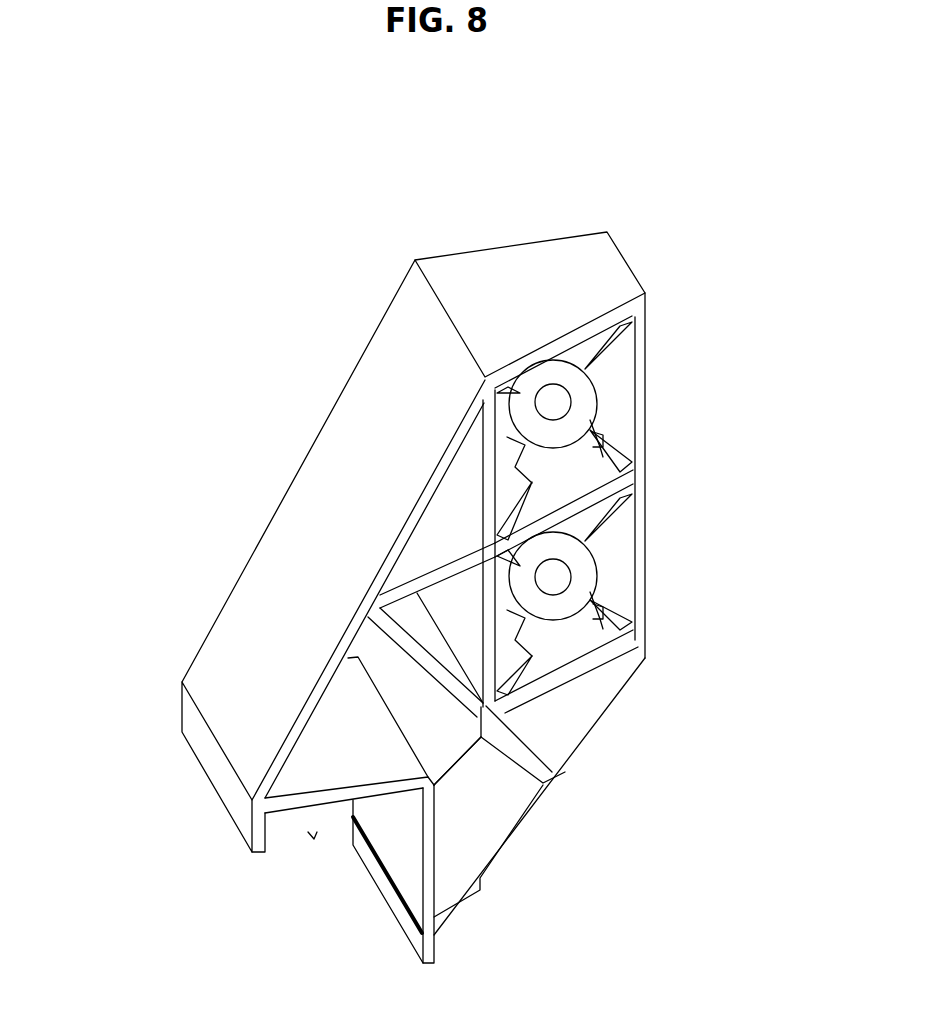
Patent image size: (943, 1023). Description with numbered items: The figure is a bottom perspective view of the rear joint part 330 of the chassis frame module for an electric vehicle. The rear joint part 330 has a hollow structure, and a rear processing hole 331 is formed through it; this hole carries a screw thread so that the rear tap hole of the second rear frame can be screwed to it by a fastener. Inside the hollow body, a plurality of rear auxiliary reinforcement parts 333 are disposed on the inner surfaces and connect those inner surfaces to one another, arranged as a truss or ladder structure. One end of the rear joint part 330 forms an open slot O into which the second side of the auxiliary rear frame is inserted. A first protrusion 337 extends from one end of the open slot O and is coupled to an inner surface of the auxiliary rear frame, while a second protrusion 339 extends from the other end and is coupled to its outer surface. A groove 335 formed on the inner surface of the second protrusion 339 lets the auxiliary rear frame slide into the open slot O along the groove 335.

The rear joint part 330 is at (676, 114).
The rear processing hole 331 is at (585, 397).
The rear auxiliary reinforcement part 333 is at (582, 665).
The groove 335 is at (383, 873).
The first protrusion 337 is at (218, 767).
The second protrusion 339 is at (430, 950).
The open slot O is at (312, 838).